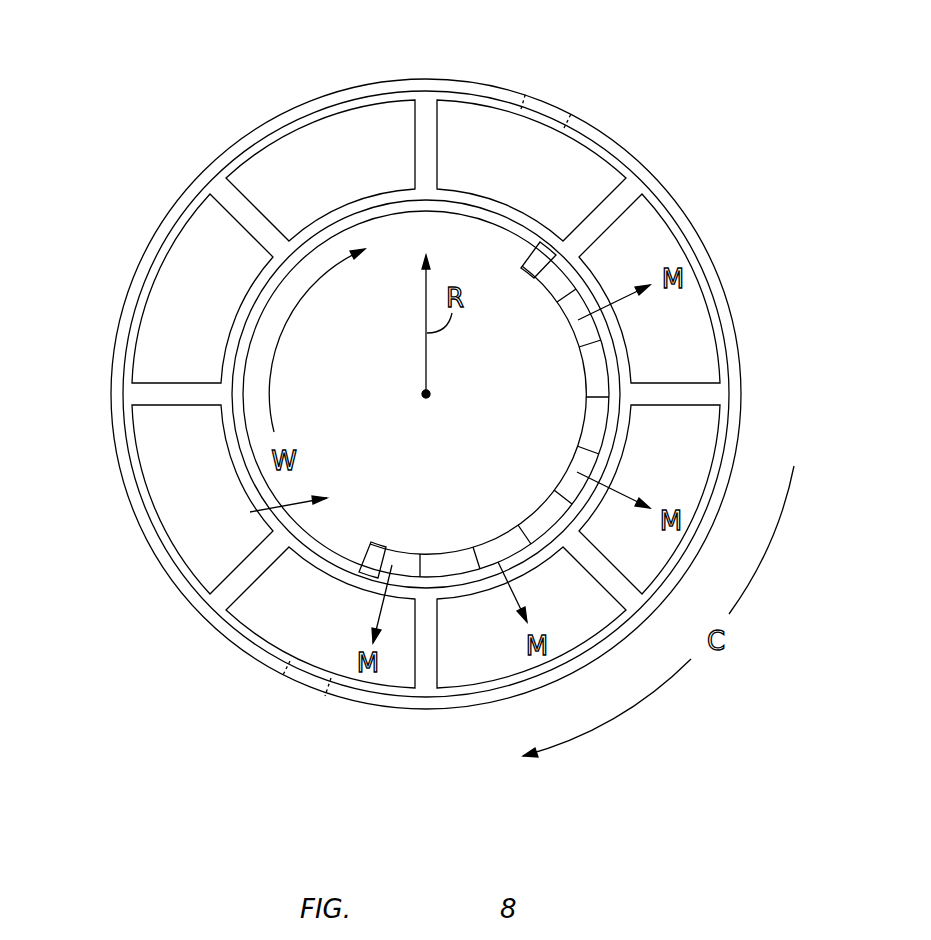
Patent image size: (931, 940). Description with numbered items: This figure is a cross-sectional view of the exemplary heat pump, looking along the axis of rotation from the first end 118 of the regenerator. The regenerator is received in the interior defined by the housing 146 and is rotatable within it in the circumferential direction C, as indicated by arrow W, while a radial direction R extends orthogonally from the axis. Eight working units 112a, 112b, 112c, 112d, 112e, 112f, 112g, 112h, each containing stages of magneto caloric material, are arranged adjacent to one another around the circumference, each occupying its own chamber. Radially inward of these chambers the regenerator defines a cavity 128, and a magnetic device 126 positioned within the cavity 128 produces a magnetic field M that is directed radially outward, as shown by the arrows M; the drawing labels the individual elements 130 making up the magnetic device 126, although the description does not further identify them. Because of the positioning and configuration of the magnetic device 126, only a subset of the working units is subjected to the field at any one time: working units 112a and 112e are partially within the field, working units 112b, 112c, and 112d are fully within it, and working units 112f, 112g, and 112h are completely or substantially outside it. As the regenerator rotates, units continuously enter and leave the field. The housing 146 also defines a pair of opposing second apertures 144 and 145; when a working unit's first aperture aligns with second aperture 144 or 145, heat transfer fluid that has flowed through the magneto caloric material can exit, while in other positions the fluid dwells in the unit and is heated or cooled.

The working unit 112a is at (470, 118).
The working unit 112b is at (693, 338).
The working unit 112c is at (687, 437).
The working unit 112d is at (478, 657).
The working unit 112e is at (290, 620).
The working unit 112f is at (167, 460).
The working unit 112g is at (197, 255).
The working unit 112h is at (363, 130).
The first end 118 is at (691, 130).
The magnetic device 126 is at (378, 548).
The cavity 128 is at (250, 512).
The magnets 130 is at (558, 280).
The second aperture 144 is at (549, 108).
The second aperture 145 is at (297, 691).
The housing 146 is at (433, 80).